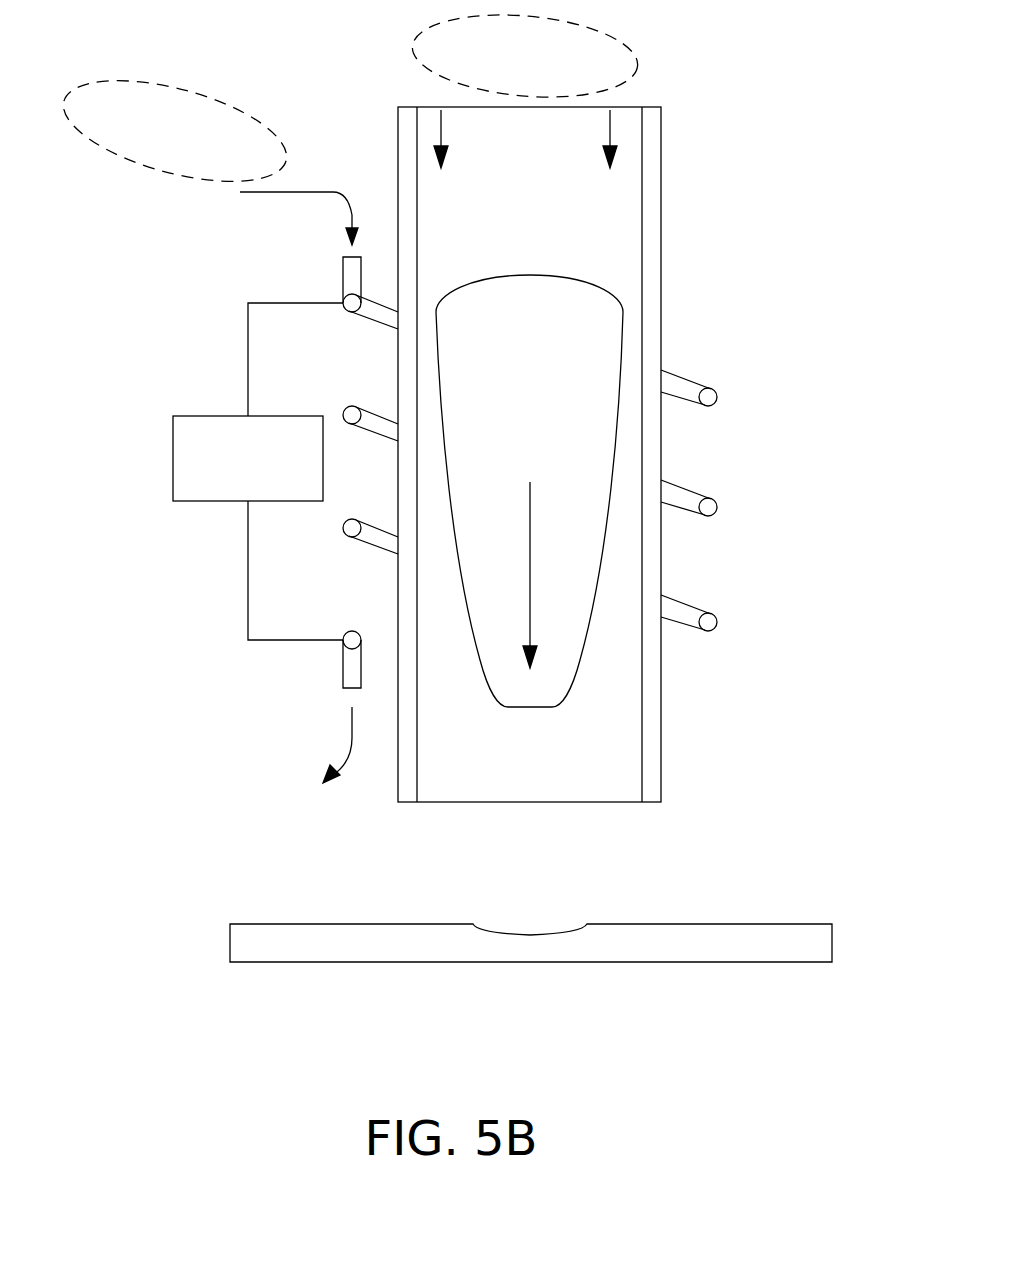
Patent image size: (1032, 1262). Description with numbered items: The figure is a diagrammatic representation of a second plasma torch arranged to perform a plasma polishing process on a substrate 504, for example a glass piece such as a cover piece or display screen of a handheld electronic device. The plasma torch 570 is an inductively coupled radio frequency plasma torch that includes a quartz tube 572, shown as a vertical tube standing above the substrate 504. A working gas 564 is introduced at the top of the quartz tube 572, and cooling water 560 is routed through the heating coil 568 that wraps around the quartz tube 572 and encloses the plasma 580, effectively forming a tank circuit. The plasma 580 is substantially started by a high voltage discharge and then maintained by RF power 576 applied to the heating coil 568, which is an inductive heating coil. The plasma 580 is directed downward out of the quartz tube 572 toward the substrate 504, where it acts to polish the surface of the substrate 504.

The substrate 504 is at (713, 963).
The cooling water 560 is at (133, 78).
The working gas 564 is at (437, 27).
The heating coil 568 is at (716, 390).
The plasma torch 570 is at (793, 70).
The quartz tube 572 is at (397, 763).
The RF power 576 is at (266, 414).
The plasma 580 is at (600, 286).